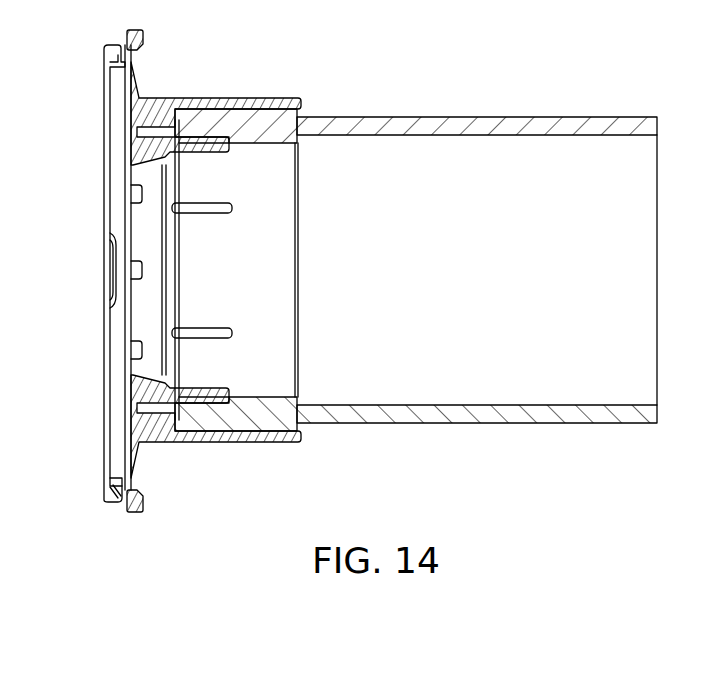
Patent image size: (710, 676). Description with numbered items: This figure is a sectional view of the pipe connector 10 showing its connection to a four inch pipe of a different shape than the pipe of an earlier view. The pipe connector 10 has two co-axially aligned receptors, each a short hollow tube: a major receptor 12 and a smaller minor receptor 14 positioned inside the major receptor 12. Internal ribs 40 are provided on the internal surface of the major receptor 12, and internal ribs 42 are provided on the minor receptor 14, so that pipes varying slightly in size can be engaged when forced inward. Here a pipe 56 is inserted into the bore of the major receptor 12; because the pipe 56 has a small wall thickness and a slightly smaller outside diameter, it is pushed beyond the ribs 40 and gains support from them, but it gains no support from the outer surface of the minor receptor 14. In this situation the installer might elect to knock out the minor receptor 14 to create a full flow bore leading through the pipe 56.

The pipe connector 10 is at (93, 84).
The major receptor 12 is at (208, 98).
The minor receptor 14 is at (268, 290).
The internal ribs 40 is at (217, 117).
The internal ribs 42 is at (214, 338).
The pipe 56 is at (580, 117).